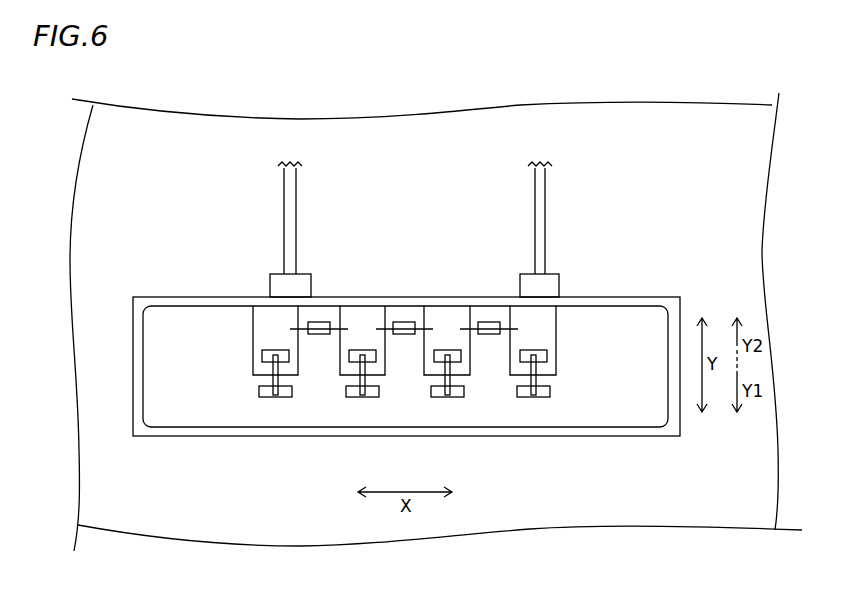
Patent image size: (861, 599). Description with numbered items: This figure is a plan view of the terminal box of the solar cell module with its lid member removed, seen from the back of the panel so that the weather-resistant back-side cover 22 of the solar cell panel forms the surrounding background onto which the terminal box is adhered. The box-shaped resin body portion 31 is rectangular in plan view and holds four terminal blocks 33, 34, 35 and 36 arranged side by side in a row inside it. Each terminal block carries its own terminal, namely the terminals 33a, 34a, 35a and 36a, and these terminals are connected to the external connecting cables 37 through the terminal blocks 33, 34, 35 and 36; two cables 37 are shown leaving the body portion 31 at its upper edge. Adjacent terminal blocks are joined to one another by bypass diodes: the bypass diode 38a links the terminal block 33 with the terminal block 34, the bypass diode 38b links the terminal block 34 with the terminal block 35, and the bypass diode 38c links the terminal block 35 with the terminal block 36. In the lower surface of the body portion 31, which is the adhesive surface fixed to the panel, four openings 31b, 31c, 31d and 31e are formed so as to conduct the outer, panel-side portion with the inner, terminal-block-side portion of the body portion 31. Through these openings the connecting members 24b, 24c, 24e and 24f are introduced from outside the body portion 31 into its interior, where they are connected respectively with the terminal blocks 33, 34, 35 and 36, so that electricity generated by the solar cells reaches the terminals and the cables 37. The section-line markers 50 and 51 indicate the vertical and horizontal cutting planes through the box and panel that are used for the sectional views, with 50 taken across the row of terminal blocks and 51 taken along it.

The back-side cover 22 is at (737, 198).
The connecting member 24b is at (440, 382).
The connecting member 24c is at (355, 382).
The connecting member 24e is at (526, 382).
The connecting member 24f is at (268, 382).
The body portion 31 is at (171, 302).
The opening 31b is at (439, 398).
The opening 31c is at (354, 398).
The opening 31d is at (525, 398).
The opening 31e is at (267, 398).
The terminal block 33 is at (262, 313).
The terminal 33a is at (263, 352).
The terminal block 34 is at (362, 313).
The terminal 34a is at (350, 352).
The terminal block 35 is at (450, 313).
The terminal 35a is at (435, 352).
The terminal block 36 is at (540, 313).
The terminal 36a is at (521, 352).
The external connecting cable 37 is at (290, 202).
The bypass diode 38a is at (320, 318).
The bypass diode 38b is at (405, 318).
The bypass diode 38c is at (490, 318).
The section line 50 is at (408, 73).
The section line 51 is at (42, 376).